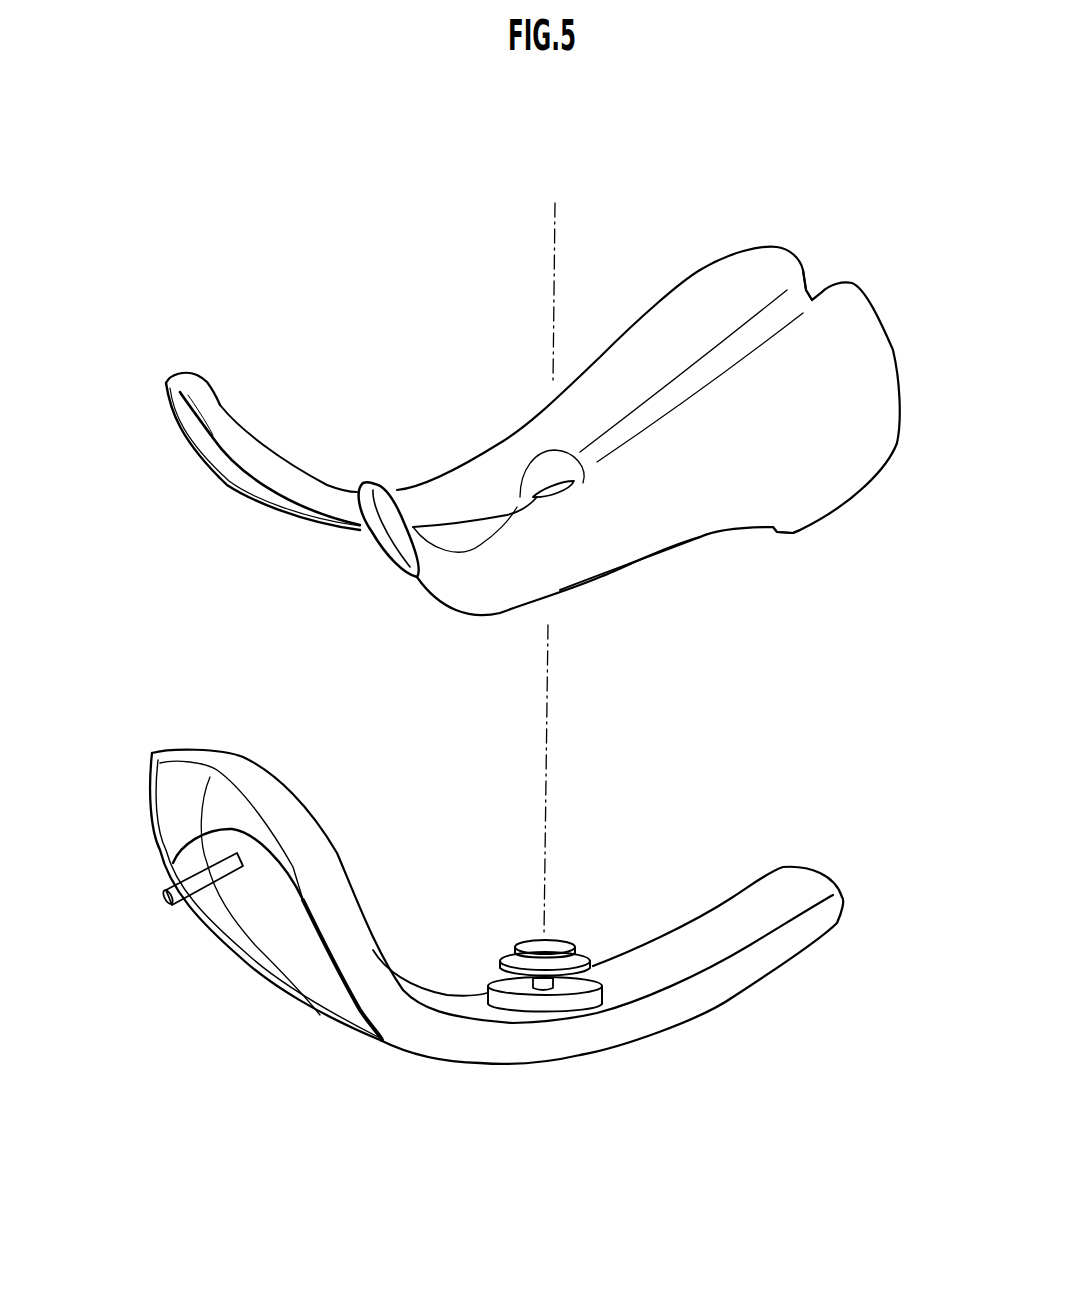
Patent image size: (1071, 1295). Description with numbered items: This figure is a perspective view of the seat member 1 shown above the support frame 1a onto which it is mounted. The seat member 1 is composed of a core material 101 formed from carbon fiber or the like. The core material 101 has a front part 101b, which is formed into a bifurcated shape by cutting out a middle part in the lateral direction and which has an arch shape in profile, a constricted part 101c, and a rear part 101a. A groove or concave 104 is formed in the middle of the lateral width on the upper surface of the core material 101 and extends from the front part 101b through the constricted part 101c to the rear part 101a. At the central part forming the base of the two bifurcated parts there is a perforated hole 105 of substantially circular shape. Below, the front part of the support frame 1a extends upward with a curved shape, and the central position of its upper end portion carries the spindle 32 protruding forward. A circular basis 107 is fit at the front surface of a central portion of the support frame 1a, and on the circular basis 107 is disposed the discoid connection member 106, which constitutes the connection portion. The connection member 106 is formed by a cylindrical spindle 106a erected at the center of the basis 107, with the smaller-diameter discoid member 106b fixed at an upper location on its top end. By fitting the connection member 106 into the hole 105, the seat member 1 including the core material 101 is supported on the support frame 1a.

The seat member 1 is at (645, 311).
The core material 101 is at (716, 278).
The rear part 101a is at (777, 527).
The front part 101b is at (380, 480).
The constricted part 101c is at (626, 562).
The groove or concave 104 is at (787, 310).
The perforated hole 105 is at (553, 480).
The support frame 1a is at (333, 837).
The spindle 32 is at (163, 897).
The discoid connection member 106 is at (572, 937).
The cylindrical spindle 106a is at (537, 988).
The discoid member 106b is at (530, 940).
The circular basis 107 is at (583, 1010).